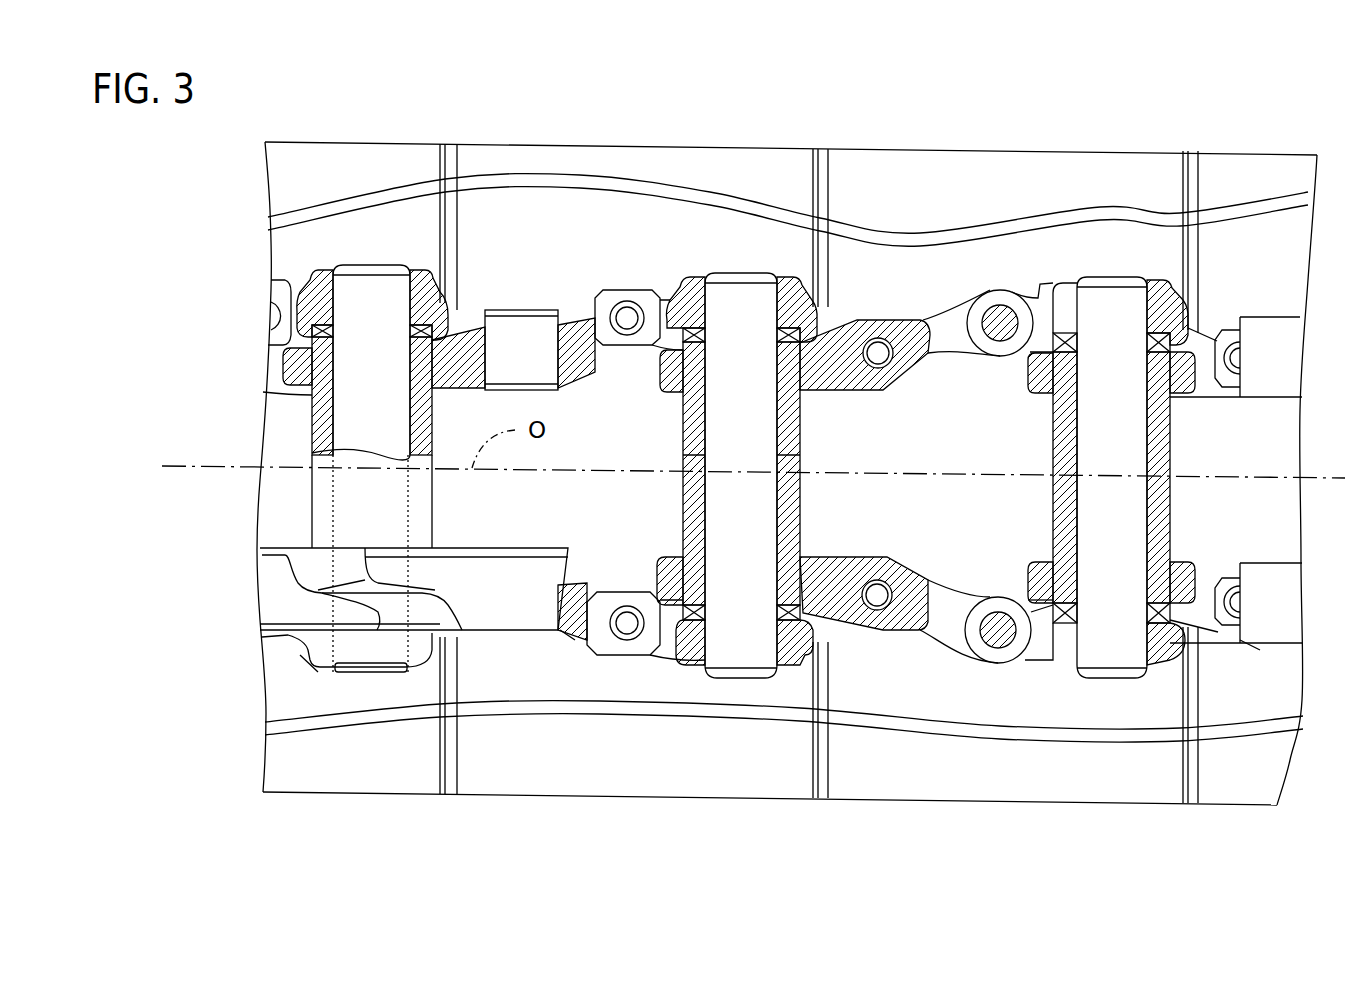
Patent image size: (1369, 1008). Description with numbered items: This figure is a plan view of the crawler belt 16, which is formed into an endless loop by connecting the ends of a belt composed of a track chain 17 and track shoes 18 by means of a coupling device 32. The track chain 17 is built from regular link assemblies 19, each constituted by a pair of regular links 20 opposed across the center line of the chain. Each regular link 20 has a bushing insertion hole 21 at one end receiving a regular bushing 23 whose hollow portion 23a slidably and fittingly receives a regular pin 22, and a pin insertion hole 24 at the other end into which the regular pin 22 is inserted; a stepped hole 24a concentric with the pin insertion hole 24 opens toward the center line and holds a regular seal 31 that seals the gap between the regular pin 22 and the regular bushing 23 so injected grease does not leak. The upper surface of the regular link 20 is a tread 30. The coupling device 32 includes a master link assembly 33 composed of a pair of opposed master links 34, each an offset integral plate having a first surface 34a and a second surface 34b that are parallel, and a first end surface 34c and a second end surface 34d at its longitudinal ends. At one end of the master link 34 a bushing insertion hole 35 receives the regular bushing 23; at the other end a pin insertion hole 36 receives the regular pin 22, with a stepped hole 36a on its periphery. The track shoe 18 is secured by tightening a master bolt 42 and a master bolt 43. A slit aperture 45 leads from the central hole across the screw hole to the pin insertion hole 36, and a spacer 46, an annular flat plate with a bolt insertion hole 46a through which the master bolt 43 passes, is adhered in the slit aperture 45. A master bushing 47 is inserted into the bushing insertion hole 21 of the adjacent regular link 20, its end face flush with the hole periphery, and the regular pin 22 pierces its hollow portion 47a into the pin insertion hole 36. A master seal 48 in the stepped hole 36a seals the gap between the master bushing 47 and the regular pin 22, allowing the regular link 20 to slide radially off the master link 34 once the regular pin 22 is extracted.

The crawler belt 16 is at (1105, 818).
The track chain 17 is at (582, 277).
The track shoe 18 is at (355, 795).
The regular link assembly 19 is at (308, 665).
The regular link 20 is at (285, 287).
The bushing insertion hole 21 is at (300, 398).
The regular pin 22 is at (373, 265).
The regular bushing 23 is at (312, 482).
The hollow portion 23a is at (312, 428).
The pin insertion hole 24 is at (345, 300).
The stepped hole 24a is at (410, 333).
The tread 30 is at (487, 577).
The regular seal 31 is at (414, 290).
The coupling device 32 is at (920, 297).
The master link assembly 33 is at (958, 652).
The master link 34 is at (870, 322).
The first surface 34a is at (948, 640).
The second surface 34b is at (947, 580).
The first end surface 34c is at (662, 582).
The second end surface 34d is at (1185, 637).
The bushing insertion hole 35 is at (683, 395).
The pin insertion hole 36 is at (1085, 292).
The stepped hole 36a is at (1147, 340).
The master bolt 42 is at (876, 358).
The master bolt 43 is at (1003, 342).
The slit aperture 45 is at (1042, 292).
The spacer 46 is at (963, 378).
The bolt insertion hole 46a is at (1003, 318).
The master bushing 47 is at (1050, 528).
The hollow portion 47a is at (1072, 508).
The master seal 48 is at (1160, 288).